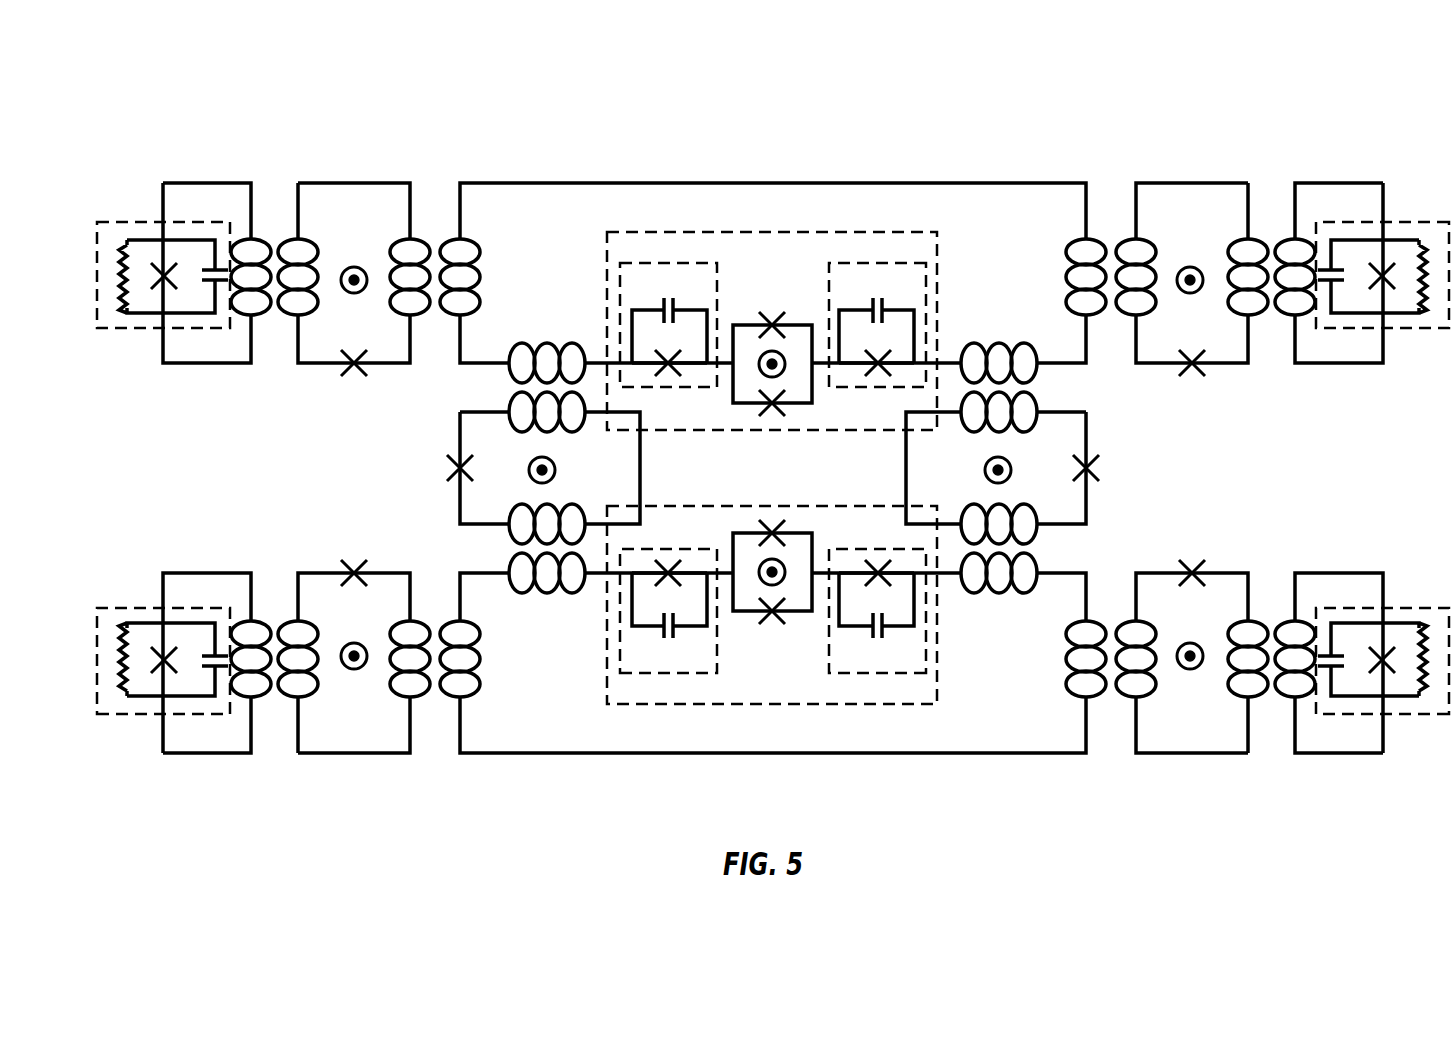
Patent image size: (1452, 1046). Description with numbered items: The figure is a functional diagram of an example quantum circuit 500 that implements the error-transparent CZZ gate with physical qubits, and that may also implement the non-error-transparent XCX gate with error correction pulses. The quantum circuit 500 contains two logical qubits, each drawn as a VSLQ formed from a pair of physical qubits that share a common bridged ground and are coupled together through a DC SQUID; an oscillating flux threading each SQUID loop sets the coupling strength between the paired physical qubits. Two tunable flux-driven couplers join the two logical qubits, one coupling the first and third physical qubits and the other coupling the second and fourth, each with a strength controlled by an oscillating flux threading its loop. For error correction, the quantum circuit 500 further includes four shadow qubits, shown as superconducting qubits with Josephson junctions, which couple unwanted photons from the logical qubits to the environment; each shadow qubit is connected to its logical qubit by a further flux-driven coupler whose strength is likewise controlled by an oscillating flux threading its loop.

The quantum circuit 500 is at (153, 104).